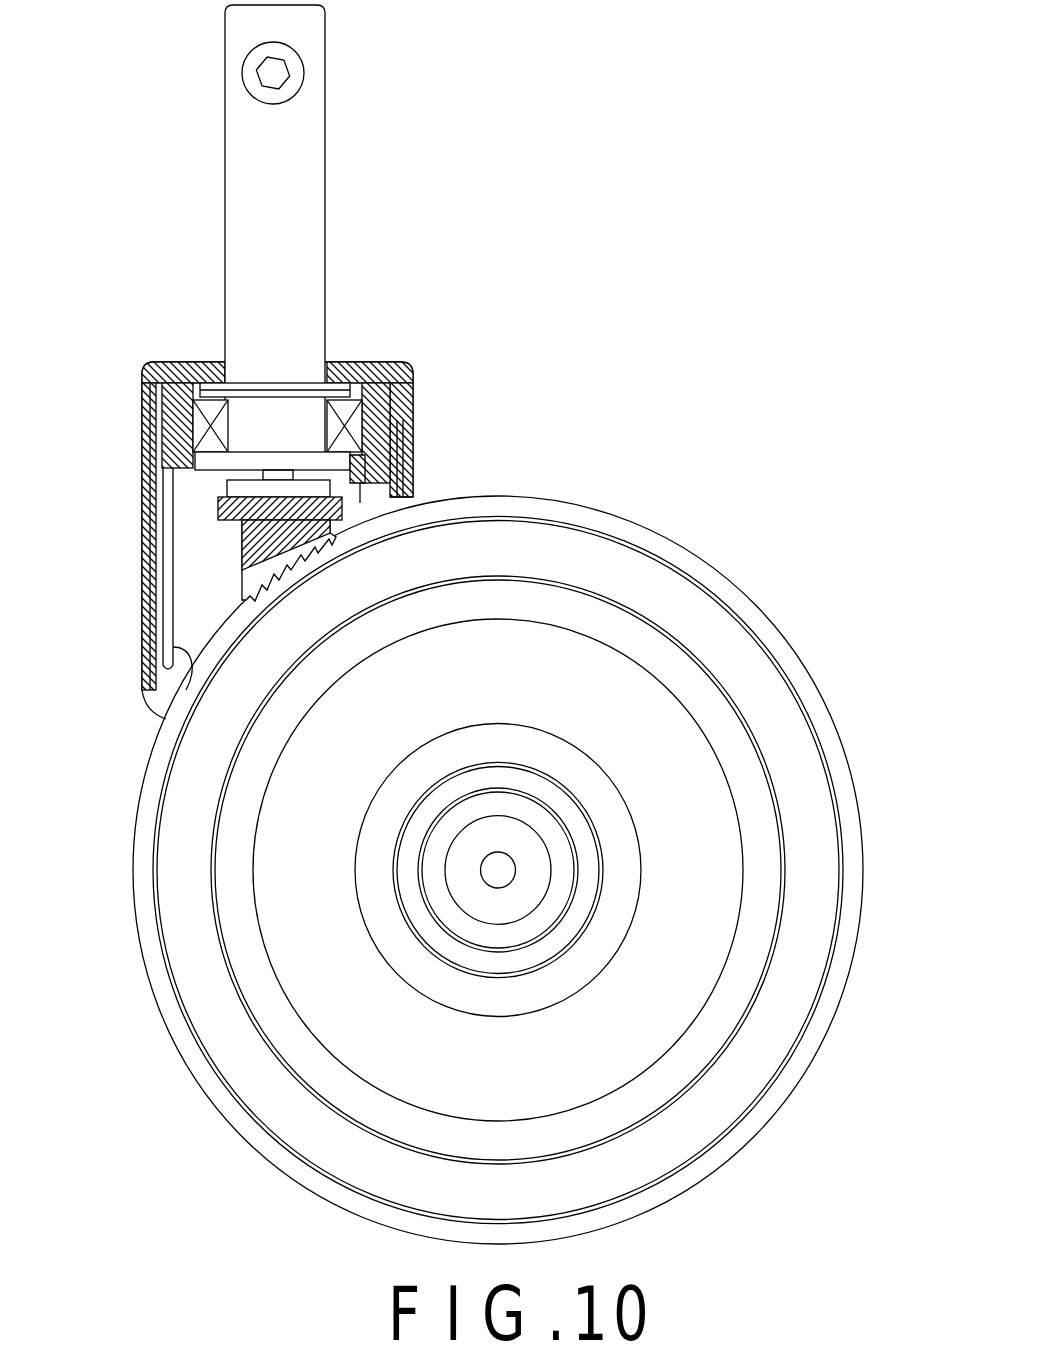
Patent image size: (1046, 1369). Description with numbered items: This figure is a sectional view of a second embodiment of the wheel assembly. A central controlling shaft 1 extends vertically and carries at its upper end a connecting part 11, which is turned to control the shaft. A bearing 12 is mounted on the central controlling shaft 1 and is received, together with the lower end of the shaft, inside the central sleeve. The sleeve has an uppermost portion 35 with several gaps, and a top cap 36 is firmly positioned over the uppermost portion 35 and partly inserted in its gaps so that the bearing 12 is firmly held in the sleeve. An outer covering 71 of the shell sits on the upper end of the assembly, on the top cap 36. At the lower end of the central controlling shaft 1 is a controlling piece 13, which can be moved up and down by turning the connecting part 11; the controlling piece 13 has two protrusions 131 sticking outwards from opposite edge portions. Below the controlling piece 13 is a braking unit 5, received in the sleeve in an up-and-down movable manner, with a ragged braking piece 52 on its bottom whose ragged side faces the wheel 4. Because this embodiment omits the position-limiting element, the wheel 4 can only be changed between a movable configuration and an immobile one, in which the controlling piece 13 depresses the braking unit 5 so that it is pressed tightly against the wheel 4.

The central controlling shaft 1 is at (300, 207).
The connecting part 11 is at (283, 73).
The bearing 12 is at (203, 382).
The controlling piece 13 is at (303, 497).
The protrusions 131 is at (366, 486).
The uppermost portion 35 is at (147, 376).
The top cap 36 is at (408, 368).
The wheel 4 is at (800, 768).
The braking unit 5 is at (240, 527).
The ragged braking piece 52 is at (269, 582).
The outer covering 71 is at (370, 370).